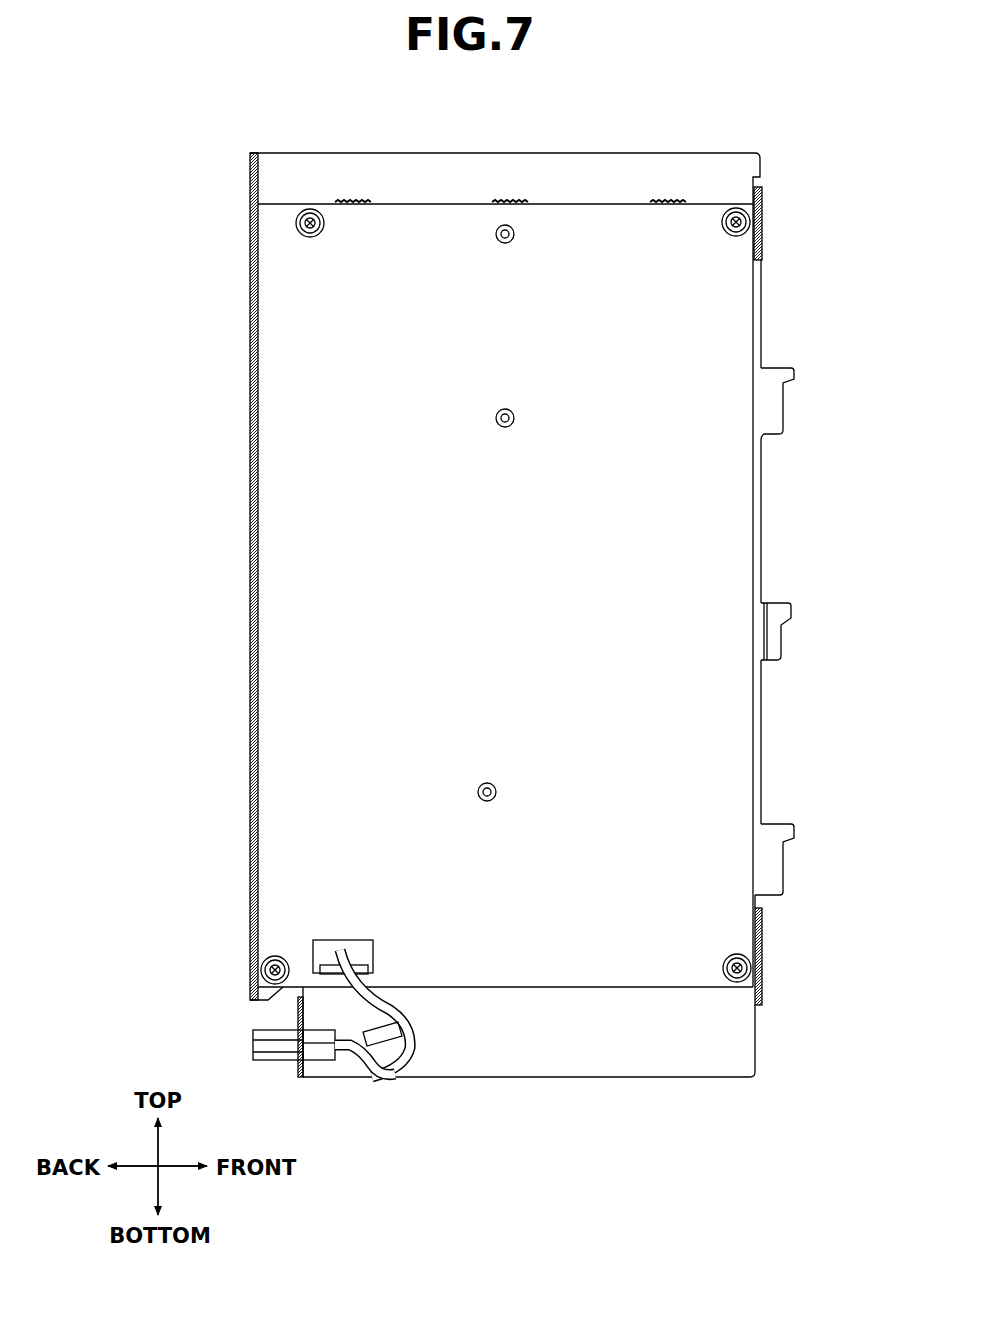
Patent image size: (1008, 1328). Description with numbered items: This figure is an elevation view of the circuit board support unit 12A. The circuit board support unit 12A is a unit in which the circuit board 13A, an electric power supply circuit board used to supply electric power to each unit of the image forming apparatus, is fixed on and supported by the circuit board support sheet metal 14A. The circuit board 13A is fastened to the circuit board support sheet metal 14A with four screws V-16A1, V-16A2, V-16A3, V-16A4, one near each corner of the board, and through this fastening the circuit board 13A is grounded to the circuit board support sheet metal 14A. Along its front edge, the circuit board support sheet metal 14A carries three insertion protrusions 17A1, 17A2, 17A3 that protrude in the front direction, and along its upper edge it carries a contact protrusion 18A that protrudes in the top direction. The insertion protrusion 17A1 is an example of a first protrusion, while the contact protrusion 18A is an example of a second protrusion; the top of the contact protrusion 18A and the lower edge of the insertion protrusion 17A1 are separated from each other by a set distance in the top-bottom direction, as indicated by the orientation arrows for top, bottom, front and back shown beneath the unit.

The circuit board support unit 12A is at (220, 150).
The circuit board 13A is at (280, 604).
The circuit board support sheet metal 14A is at (718, 180).
The insertion protrusion 17A1 is at (772, 407).
The insertion protrusion 17A2 is at (775, 640).
The insertion protrusion 17A3 is at (775, 868).
The contact protrusion 18A is at (648, 152).
The screw V-16A1 is at (296, 225).
The screw V-16A2 is at (750, 222).
The screw V-16A3 is at (262, 972).
The screw V-16A4 is at (752, 968).